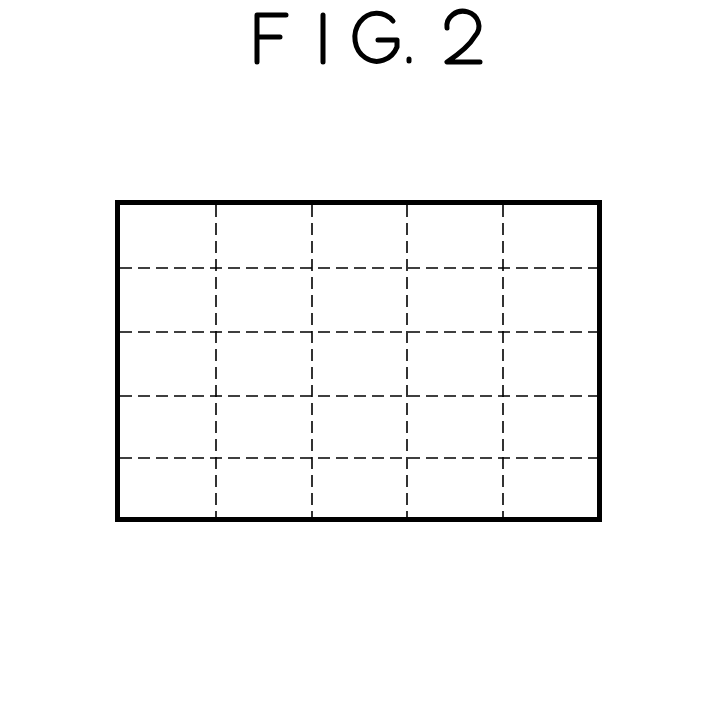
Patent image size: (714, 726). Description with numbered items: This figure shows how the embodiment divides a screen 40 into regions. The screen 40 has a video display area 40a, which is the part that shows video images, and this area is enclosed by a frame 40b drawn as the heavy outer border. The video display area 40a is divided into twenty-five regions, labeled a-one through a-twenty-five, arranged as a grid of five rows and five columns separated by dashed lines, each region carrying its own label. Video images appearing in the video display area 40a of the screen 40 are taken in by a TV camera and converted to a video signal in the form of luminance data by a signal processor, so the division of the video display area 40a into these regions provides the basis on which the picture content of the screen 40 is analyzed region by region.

The screen 40 is at (90, 197).
The video display area 40a is at (192, 215).
The frame 40b is at (372, 200).